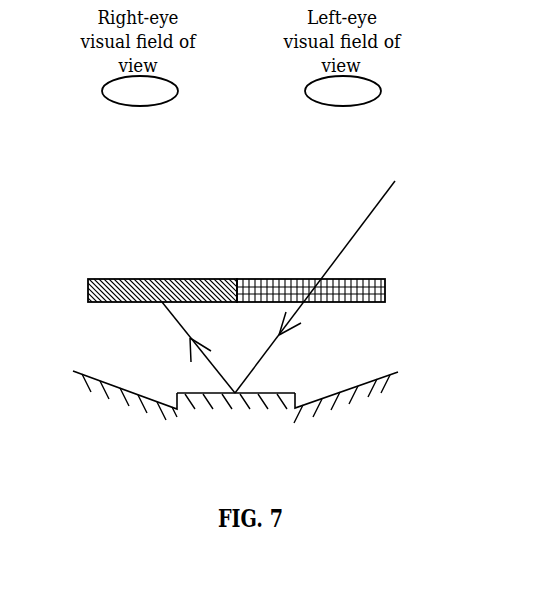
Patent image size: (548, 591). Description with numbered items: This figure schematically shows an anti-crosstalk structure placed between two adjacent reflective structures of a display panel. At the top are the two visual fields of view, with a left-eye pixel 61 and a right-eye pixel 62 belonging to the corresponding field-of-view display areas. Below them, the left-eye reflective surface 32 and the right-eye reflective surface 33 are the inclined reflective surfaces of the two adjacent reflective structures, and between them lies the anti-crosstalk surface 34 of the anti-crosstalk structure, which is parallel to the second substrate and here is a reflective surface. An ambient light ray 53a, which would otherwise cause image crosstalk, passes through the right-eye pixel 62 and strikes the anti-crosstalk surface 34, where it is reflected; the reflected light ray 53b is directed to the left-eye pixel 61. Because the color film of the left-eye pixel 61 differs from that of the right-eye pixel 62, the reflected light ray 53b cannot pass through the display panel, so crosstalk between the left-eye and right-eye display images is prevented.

The left-eye pixel 61 is at (88, 290).
The right-eye pixel 62 is at (385, 290).
The ambient light ray 53a is at (328, 268).
The reflected light ray 53b is at (180, 326).
The left-eye reflective surface 32 is at (132, 393).
The right-eye reflective surface 33 is at (343, 392).
The anti-crosstalk surface 34 is at (238, 396).